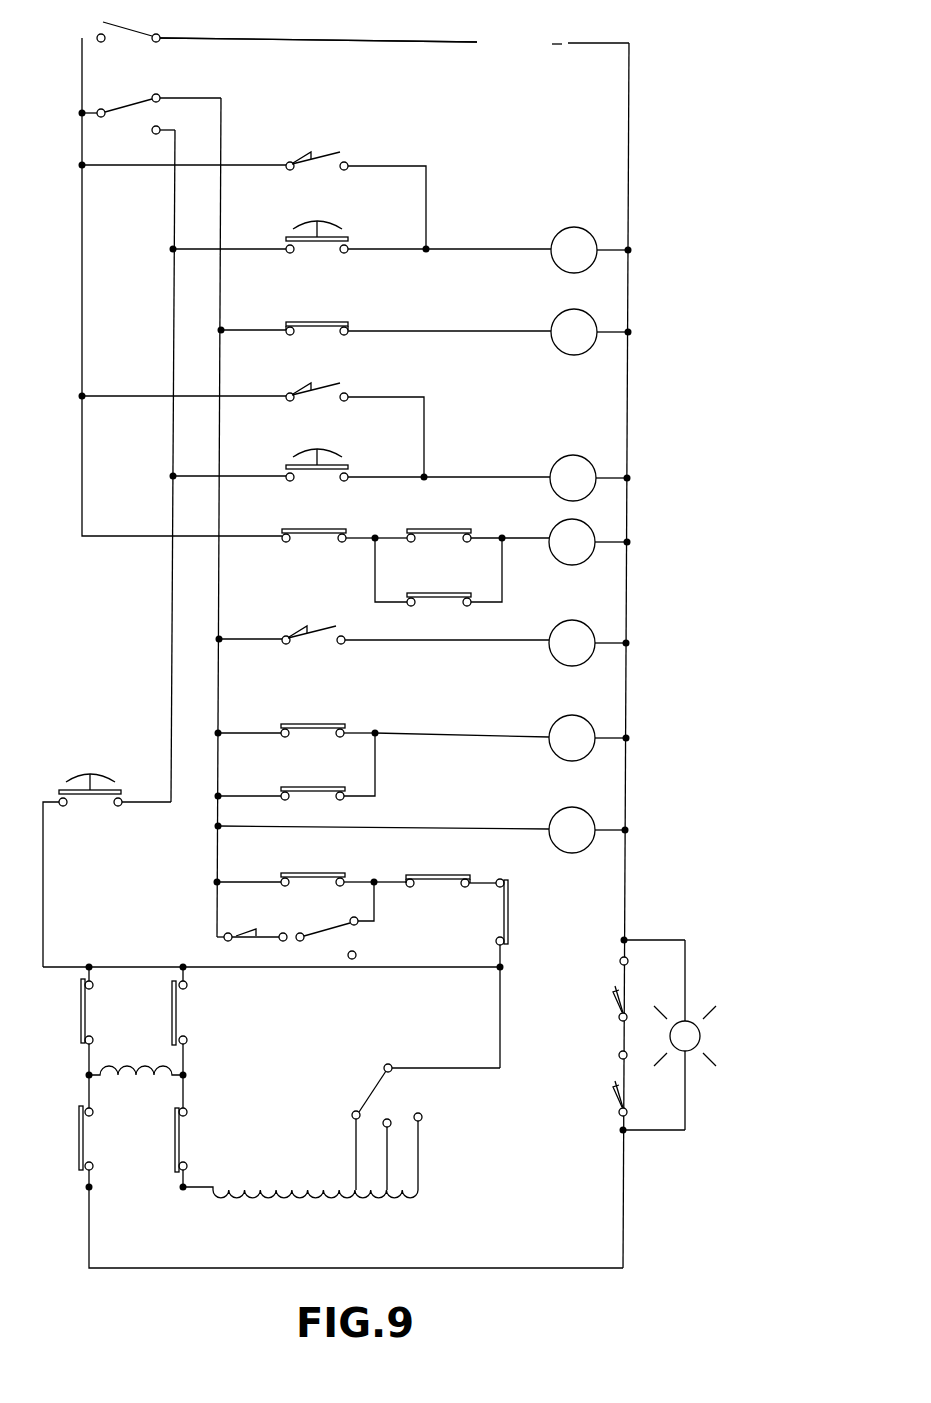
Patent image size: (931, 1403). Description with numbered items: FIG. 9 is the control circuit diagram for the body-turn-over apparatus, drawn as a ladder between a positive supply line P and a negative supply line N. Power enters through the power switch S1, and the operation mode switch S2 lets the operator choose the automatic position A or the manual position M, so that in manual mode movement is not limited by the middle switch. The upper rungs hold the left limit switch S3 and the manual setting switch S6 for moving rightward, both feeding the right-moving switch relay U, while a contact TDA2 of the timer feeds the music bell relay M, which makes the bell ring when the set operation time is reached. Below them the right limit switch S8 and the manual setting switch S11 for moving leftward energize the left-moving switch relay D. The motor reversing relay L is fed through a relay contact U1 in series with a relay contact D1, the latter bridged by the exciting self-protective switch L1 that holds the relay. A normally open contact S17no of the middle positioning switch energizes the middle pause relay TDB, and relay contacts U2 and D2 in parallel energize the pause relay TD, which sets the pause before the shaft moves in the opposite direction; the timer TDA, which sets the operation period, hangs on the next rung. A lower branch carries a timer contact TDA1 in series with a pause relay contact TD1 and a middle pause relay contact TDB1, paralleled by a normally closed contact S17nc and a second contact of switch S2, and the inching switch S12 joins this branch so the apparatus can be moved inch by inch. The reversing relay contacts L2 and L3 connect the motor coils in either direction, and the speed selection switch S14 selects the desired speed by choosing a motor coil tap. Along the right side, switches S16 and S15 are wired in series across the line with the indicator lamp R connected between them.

The power switch S1 is at (287, 21).
The operation mode switch S2 is at (228, 518).
The left limit switch S3 is at (254, 186).
The manual setting switch for moving rightward S6 is at (299, 225).
The timer TDA contact TDA2 is at (386, 312).
The right limit switch S8 is at (253, 415).
The manual setting switch for moving leftward S11 is at (298, 453).
The right-moving switch relay U contact U1 is at (328, 519).
The left-moving switch relay D contact D1 is at (461, 519).
The exciting self-protective switch L1 is at (438, 572).
The middle positioning switch normally open contact S17no is at (384, 620).
The right-moving switch relay U contact U2 is at (296, 715).
The left-moving switch relay D contact D2 is at (296, 766).
The inching switch S12 is at (107, 861).
The timer TDA contact TDA1 is at (297, 862).
The pause relay TD contact TD1 is at (435, 862).
The middle pause relay TDB contact TDB1 is at (521, 973).
The middle positioning switch normally closed contact S17nc is at (252, 918).
The motor reversing relay L contact L2 is at (71, 1077).
The motor reversing relay L contact L3 is at (138, 1077).
The speed selection switch S14 is at (341, 1131).
The limit switch S16 is at (632, 979).
The limit switch S15 is at (632, 1092).
The indicator lamp R is at (685, 1035).
The right-moving switch relay U is at (527, 250).
The music bell relay M is at (591, 332).
The left-moving switch relay D is at (526, 478).
The motor reversing relay L is at (590, 542).
The middle pause relay TDB is at (589, 643).
The pause relay TD is at (501, 738).
The timer TDA is at (423, 830).
The positive supply line P is at (328, 36).
The negative supply line N is at (590, 32).